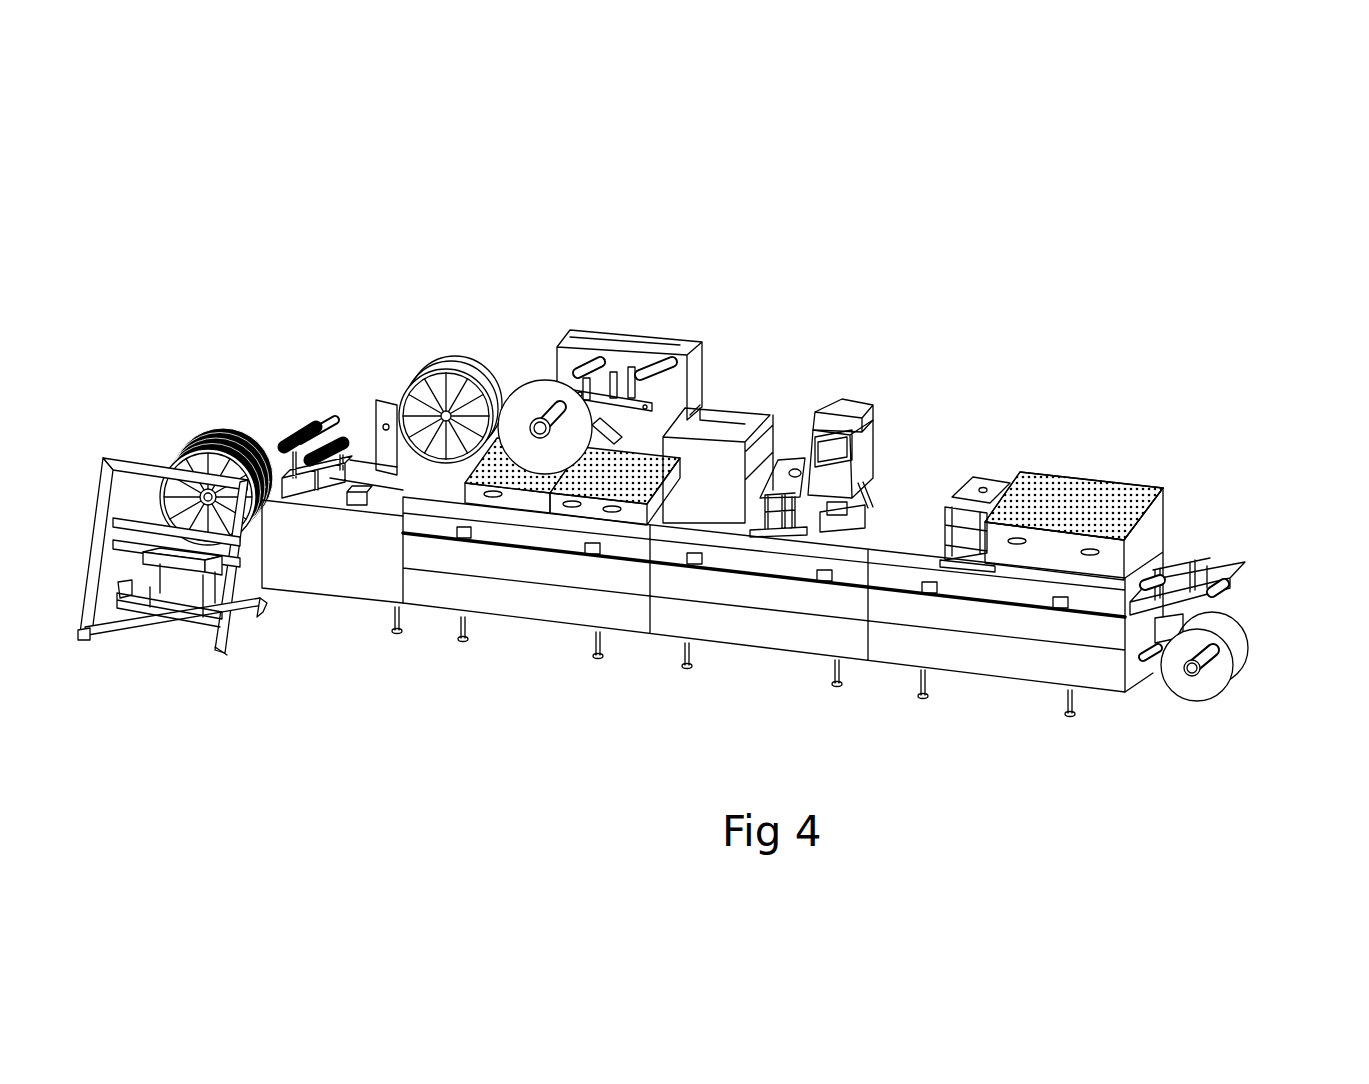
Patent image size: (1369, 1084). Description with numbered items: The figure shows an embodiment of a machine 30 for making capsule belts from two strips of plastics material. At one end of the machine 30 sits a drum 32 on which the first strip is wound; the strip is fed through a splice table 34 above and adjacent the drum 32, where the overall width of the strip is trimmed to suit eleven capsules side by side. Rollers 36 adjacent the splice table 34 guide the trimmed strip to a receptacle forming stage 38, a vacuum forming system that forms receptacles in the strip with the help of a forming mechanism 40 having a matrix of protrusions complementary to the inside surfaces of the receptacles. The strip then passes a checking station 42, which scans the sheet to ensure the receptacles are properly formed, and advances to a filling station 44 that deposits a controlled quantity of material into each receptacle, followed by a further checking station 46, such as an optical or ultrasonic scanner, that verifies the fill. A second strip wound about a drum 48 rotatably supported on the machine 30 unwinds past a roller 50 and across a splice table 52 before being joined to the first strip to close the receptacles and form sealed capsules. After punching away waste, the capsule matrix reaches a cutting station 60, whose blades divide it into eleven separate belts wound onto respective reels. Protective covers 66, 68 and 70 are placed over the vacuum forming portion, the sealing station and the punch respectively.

The machine 30 is at (1036, 216).
The drum 32 is at (1237, 648).
The splice table 34 is at (1208, 540).
The rollers 36 is at (1167, 567).
The receptacle forming stage 38 is at (1042, 461).
The forming mechanism 40 is at (1042, 461).
The checking station 42 is at (968, 487).
The filling station 44 is at (861, 410).
The further checking station 46 is at (793, 466).
The drum 48 is at (534, 396).
The roller 50 is at (594, 372).
The splice table 52 is at (638, 360).
The cutting station 60 is at (300, 413).
The protective cover 66 is at (1087, 480).
The protective cover 68 is at (592, 508).
The protective cover 70 is at (478, 494).